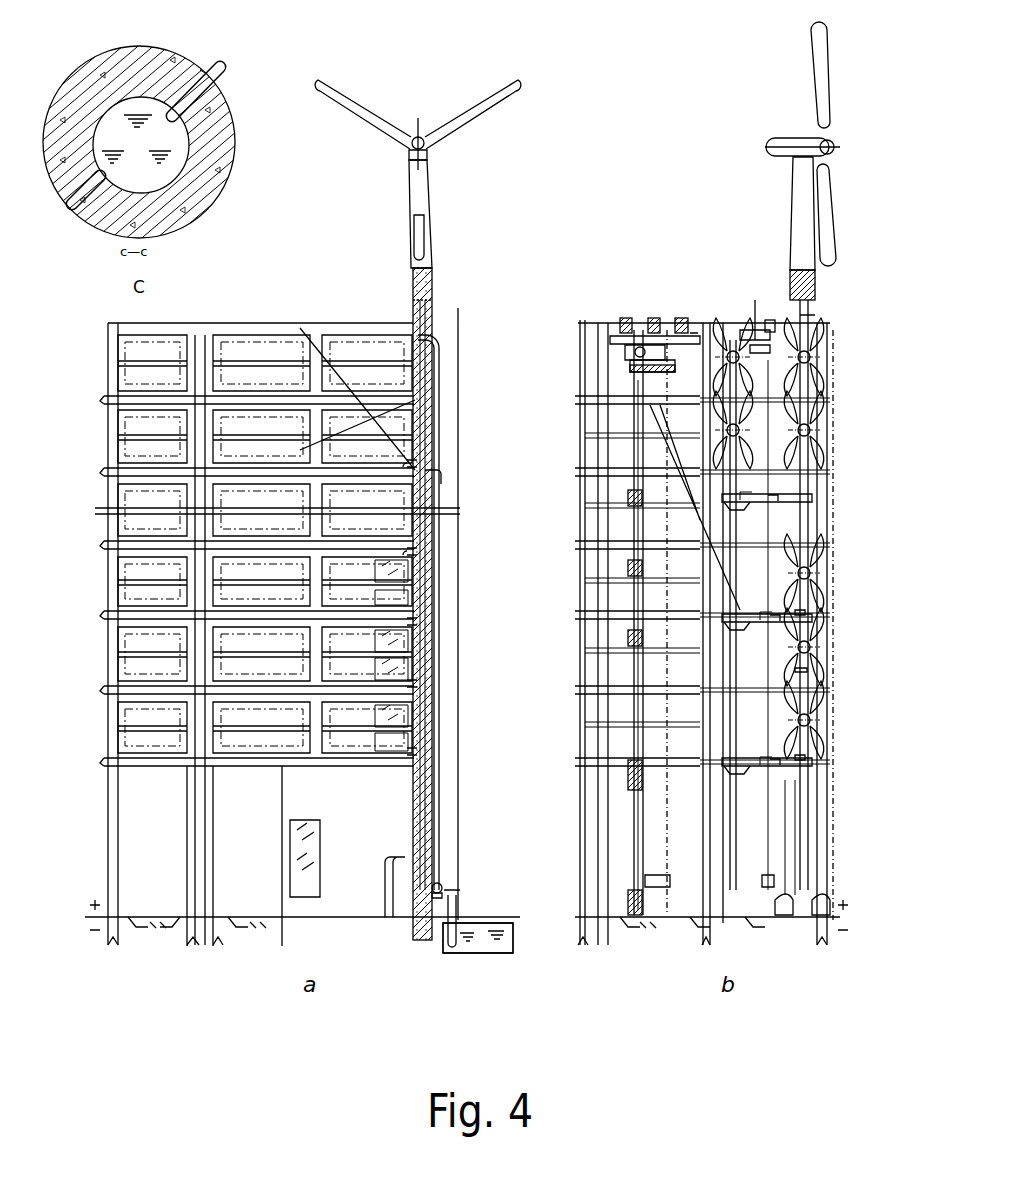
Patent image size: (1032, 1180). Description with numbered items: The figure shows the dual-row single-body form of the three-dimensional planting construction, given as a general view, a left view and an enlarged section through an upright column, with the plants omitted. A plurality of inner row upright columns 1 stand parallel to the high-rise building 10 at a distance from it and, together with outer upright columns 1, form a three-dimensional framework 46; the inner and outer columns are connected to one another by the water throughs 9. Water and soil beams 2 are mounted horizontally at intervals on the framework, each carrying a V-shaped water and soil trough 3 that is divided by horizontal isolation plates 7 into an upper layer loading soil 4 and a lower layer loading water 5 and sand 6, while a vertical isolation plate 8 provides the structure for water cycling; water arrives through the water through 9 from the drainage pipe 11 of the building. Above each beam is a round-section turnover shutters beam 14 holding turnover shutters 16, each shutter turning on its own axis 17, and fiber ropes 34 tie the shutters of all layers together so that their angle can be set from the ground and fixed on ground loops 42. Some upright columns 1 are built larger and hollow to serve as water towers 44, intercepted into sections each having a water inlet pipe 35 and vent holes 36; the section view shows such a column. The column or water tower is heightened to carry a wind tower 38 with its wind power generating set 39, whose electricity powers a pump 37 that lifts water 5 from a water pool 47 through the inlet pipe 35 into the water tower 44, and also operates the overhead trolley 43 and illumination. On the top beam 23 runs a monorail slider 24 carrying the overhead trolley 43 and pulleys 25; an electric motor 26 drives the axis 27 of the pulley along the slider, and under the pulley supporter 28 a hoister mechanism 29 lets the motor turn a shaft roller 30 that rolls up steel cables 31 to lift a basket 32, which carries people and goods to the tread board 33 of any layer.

The upright column 1 is at (108, 355).
The water and soil beam 2 is at (130, 400).
The water and soil trough 3 is at (812, 496).
The soil 4 is at (812, 620).
The water 5 is at (425, 345).
The sand 6 is at (812, 675).
The horizontal isolation plate 7 is at (810, 665).
The vertical isolation plate 8 is at (130, 112).
The water through 9 is at (810, 500).
The high-rise building 10 is at (300, 835).
The drainage pipe 11 is at (440, 535).
The turnover shutters beam 14 is at (262, 362).
The turnover shutter 16 is at (250, 340).
The axis 17 is at (812, 435).
The top beam 23 is at (690, 340).
The monorail slider 24 is at (623, 318).
The pulley 25 is at (652, 318).
The electric motor 26 is at (630, 345).
The axis of the pulley 27 is at (750, 345).
The pulley supporter 28 is at (683, 320).
The hoister mechanism 29 is at (660, 372).
The shaft roller 30 is at (655, 372).
The steel cable 31 is at (637, 380).
The basket 32 is at (665, 887).
The tread board 33 is at (790, 470).
The fiber rope 34 is at (795, 890).
The water inlet pipe 35 is at (205, 75).
The vent hole 36 is at (80, 200).
The pump 37 is at (444, 888).
The wind tower 38 is at (432, 258).
The wind power generating set 39 is at (430, 170).
The ground loop 42 is at (825, 915).
The overhead trolley 43 is at (690, 330).
The water tower 44 is at (230, 118).
The three-dimensional framework 46 is at (370, 438).
The water pool 47 is at (500, 930).